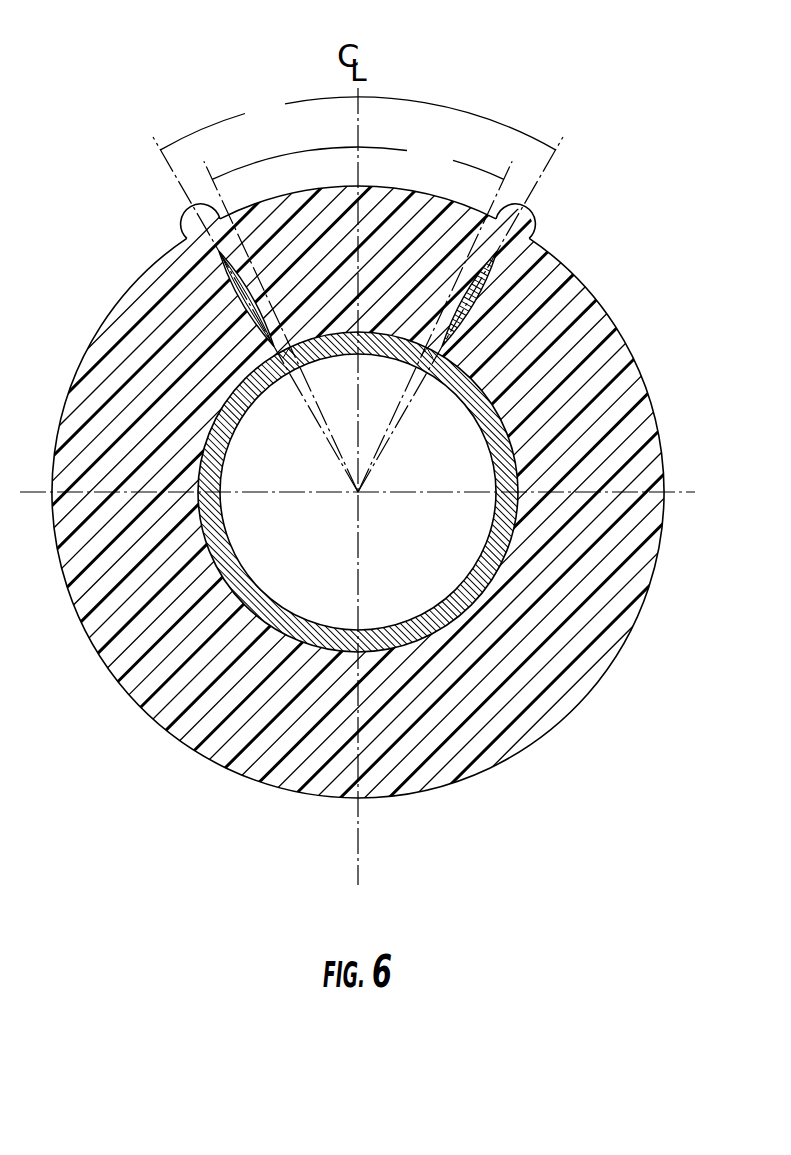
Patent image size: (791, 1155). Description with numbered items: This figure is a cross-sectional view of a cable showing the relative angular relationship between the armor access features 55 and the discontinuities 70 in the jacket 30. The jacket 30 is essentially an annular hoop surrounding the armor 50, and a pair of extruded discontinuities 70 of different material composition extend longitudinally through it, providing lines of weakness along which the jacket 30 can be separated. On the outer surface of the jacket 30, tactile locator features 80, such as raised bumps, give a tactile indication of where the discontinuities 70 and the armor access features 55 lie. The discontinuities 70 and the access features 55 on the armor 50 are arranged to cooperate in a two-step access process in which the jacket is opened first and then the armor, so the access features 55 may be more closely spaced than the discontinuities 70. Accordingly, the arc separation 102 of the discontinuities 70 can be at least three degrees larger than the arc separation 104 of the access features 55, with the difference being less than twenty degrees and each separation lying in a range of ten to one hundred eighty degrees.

The jacket 30 is at (607, 620).
The armor 50 is at (238, 582).
The armor access features 55 is at (288, 376).
The discontinuities 70 is at (214, 294).
The tactile locator features 80 is at (185, 224).
The arc separation of the discontinuities 102 is at (358, 293).
The arc separation of the access features 104 is at (358, 317).